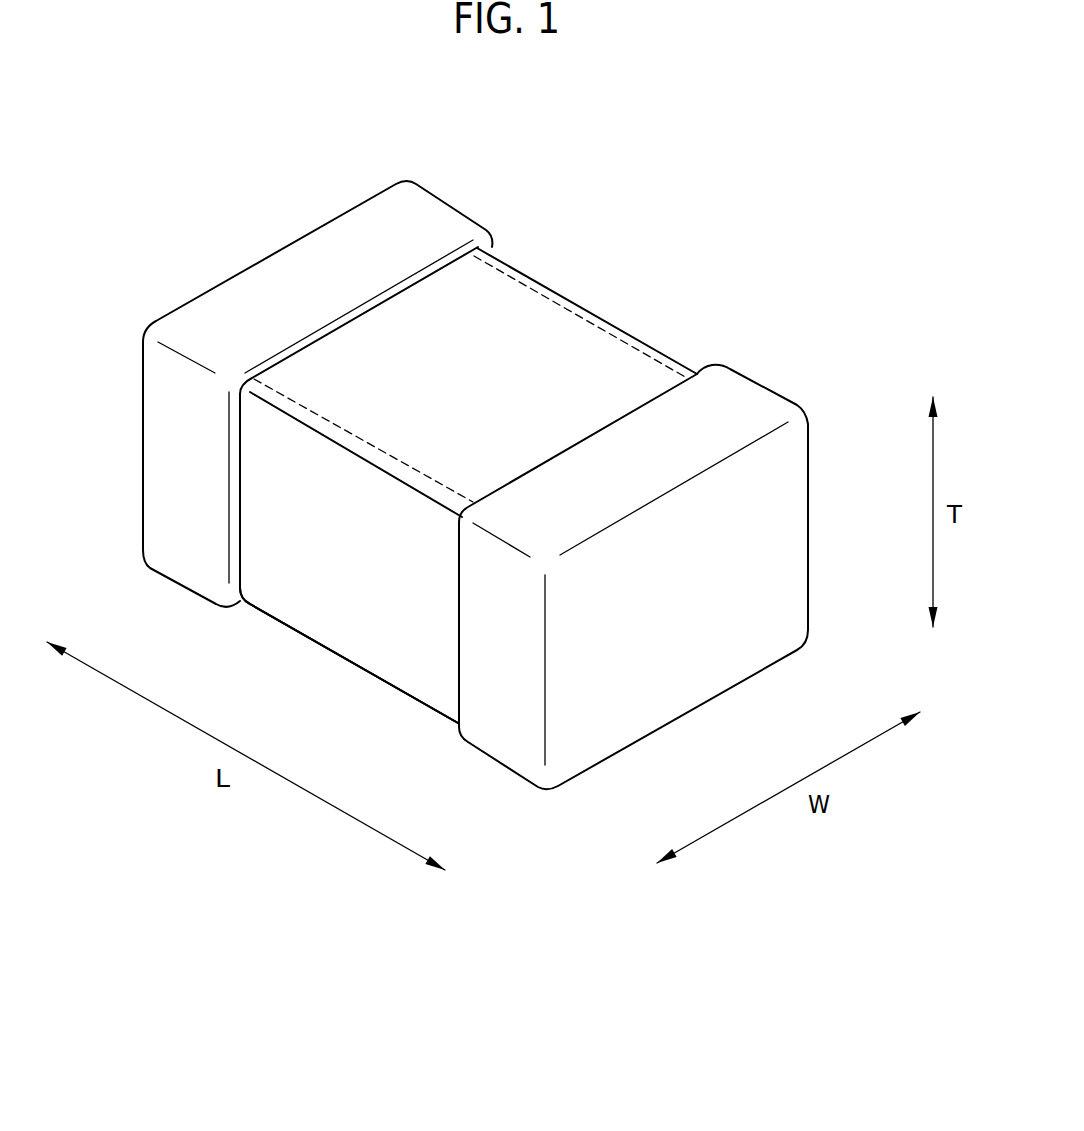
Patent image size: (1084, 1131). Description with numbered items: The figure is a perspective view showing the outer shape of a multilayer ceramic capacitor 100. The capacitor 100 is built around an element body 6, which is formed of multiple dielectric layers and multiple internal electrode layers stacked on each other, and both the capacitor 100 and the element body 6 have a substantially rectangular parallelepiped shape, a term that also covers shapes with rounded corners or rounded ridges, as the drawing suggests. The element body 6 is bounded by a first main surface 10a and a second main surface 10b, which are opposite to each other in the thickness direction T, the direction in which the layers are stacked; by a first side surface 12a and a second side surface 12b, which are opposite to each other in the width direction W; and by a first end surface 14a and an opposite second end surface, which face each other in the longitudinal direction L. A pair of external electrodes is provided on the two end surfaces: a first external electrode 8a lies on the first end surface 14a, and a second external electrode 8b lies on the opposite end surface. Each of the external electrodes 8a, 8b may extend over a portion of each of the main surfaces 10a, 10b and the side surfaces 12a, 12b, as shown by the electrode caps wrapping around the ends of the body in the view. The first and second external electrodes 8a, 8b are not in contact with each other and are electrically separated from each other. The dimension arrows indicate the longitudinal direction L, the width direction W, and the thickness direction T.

The multilayer ceramic capacitor 100 is at (556, 955).
The element body 6 is at (387, 340).
The first external electrode 8a is at (412, 215).
The second external electrode 8b is at (760, 400).
The first main surface 10a is at (505, 285).
The second main surface 10b is at (420, 680).
The first side surface 12a is at (582, 328).
The second side surface 12b is at (362, 646).
The first end surface 14a is at (180, 440).